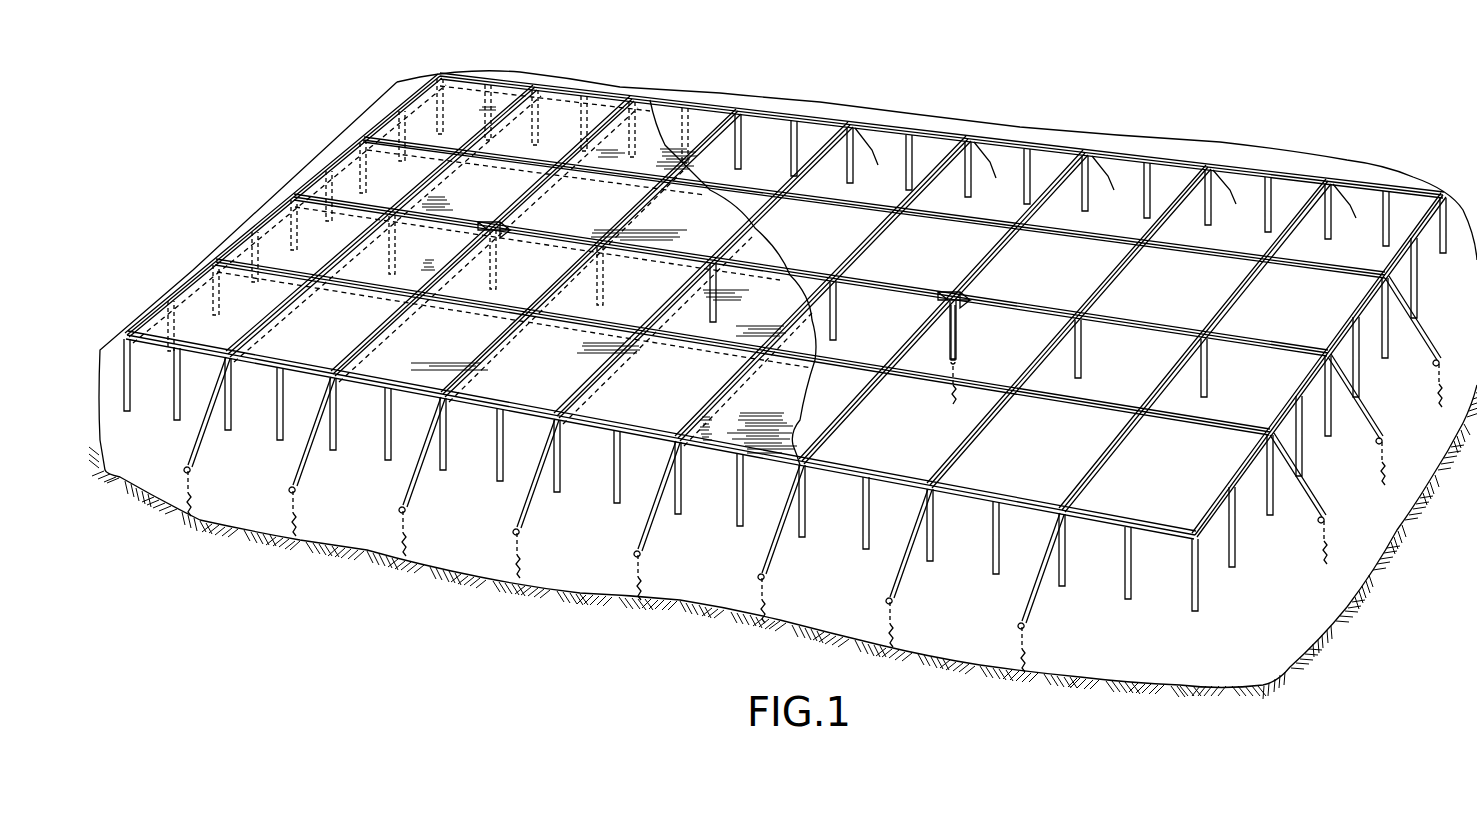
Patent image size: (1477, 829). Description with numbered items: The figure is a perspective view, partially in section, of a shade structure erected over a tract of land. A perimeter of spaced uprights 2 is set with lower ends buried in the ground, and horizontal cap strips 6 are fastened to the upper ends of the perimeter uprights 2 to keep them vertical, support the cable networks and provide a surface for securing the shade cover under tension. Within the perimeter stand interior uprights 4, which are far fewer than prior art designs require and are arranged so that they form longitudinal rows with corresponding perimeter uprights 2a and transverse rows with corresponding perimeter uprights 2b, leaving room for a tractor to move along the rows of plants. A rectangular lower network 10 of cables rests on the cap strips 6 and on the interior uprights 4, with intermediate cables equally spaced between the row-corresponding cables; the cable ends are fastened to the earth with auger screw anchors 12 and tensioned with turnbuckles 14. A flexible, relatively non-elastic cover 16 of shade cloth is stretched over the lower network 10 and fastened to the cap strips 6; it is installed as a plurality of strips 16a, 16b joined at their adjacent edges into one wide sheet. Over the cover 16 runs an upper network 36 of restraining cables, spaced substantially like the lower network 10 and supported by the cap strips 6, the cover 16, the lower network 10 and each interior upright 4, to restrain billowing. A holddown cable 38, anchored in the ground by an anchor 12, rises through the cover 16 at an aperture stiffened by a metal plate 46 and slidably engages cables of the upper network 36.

The perimeter uprights 2 is at (858, 510).
The corresponding perimeter uprights (longitudinal rows) 2a is at (280, 215).
The corresponding perimeter uprights (transverse rows) 2b is at (990, 152).
The interior upright 4 is at (838, 326).
The horizontal cap strips 6 is at (1441, 200).
The lower network 10 is at (842, 156).
The anchors 12 is at (297, 503).
The turnbuckles 14 is at (293, 481).
The cover 16 is at (207, 286).
The cover strip 16a is at (483, 101).
The cover strip 16b is at (568, 113).
The upper network 36 is at (828, 152).
The holddown cable 38 is at (960, 343).
The metal plate 46 is at (500, 206).